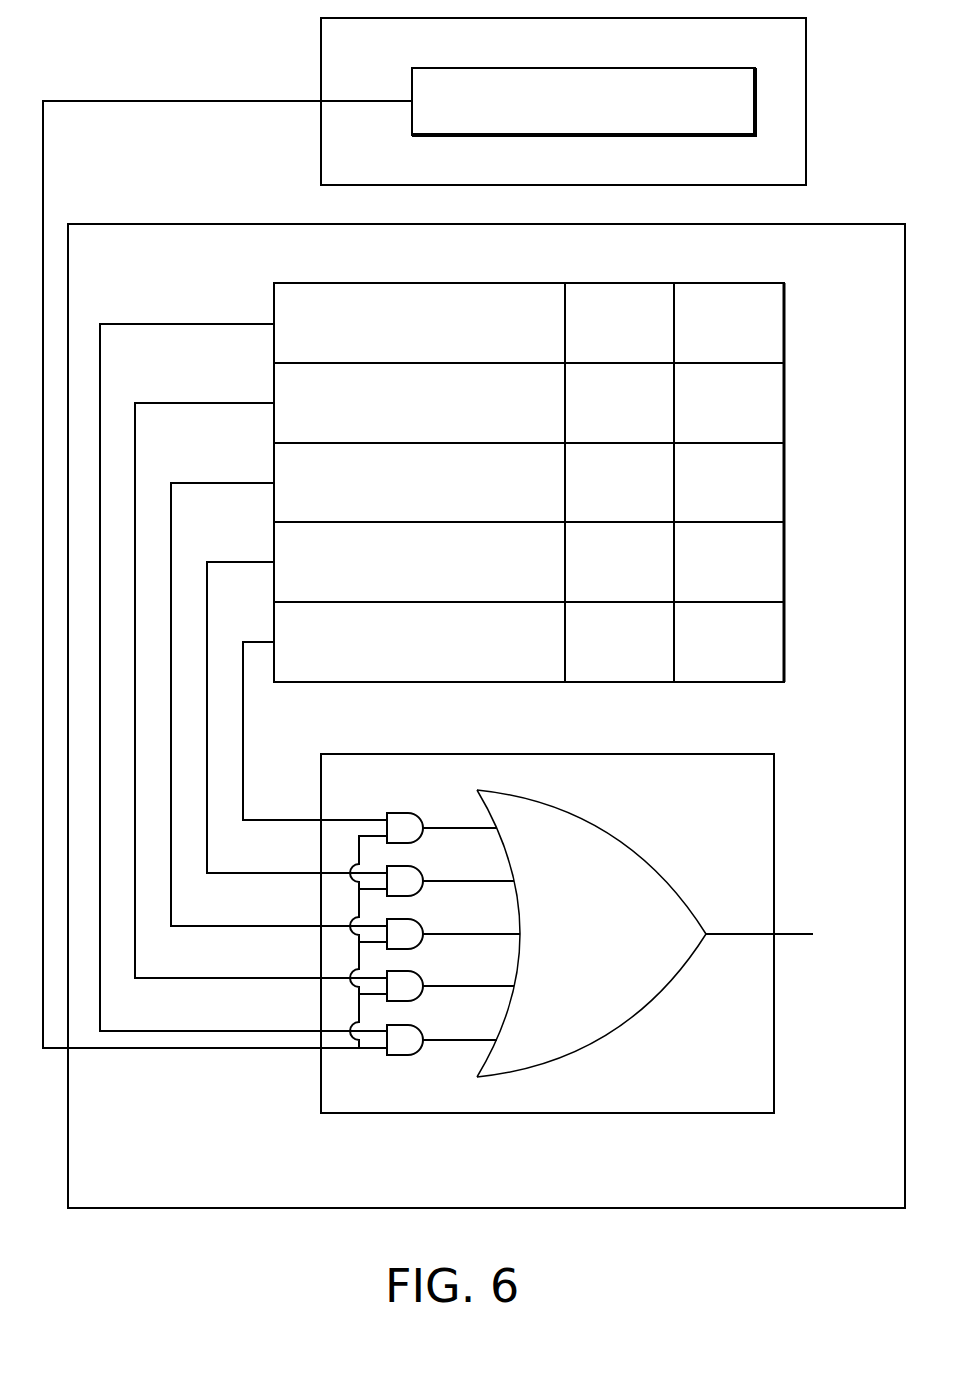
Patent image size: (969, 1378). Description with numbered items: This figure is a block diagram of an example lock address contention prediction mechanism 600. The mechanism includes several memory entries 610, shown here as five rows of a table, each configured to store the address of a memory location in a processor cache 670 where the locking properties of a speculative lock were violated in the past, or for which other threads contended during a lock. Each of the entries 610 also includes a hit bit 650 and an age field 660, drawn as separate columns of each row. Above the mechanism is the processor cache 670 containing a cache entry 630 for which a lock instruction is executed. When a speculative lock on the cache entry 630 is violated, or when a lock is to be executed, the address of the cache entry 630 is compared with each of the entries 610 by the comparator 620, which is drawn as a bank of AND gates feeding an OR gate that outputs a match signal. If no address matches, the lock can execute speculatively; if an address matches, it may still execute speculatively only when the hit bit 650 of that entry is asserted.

The LACP mechanism 600 is at (879, 276).
The memory entries 610 is at (544, 337).
The comparator 620 is at (738, 807).
The cache entry 630 is at (610, 110).
The hit bit 650 is at (751, 337).
The age field 660 is at (646, 337).
The processor cache 670 is at (786, 50).